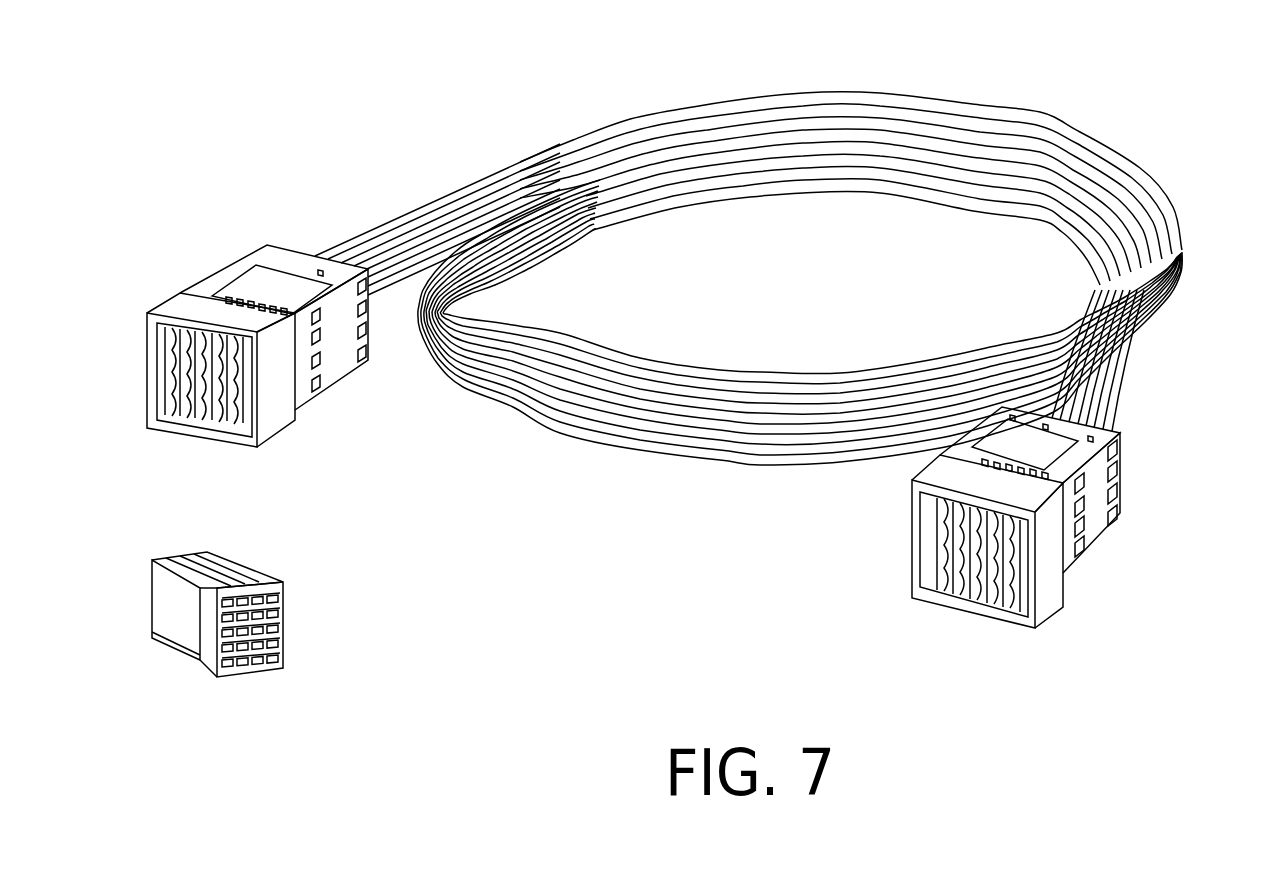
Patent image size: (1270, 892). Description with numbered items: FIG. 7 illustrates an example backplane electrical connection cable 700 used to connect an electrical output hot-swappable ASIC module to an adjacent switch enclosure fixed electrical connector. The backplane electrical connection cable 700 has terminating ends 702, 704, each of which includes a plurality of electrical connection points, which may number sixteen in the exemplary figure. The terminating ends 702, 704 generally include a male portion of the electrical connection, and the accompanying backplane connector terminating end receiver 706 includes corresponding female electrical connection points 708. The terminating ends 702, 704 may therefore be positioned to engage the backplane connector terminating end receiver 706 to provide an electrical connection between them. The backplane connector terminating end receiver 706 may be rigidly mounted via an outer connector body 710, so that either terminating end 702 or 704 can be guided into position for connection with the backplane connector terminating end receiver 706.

The backplane electrical connection cable 700 is at (1146, 173).
The terminating end 702 is at (1122, 514).
The terminating end 704 is at (268, 287).
The backplane connector terminating end receiver 706 is at (262, 686).
The female electrical connection points 708 is at (283, 628).
The outer connector body 710 is at (172, 557).